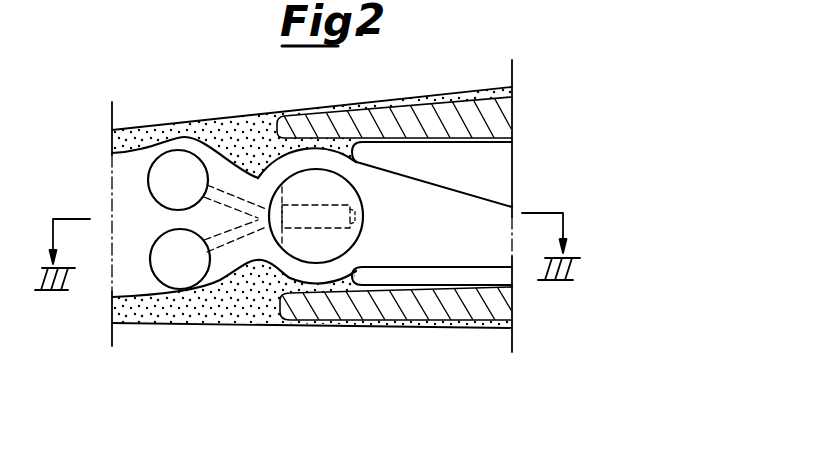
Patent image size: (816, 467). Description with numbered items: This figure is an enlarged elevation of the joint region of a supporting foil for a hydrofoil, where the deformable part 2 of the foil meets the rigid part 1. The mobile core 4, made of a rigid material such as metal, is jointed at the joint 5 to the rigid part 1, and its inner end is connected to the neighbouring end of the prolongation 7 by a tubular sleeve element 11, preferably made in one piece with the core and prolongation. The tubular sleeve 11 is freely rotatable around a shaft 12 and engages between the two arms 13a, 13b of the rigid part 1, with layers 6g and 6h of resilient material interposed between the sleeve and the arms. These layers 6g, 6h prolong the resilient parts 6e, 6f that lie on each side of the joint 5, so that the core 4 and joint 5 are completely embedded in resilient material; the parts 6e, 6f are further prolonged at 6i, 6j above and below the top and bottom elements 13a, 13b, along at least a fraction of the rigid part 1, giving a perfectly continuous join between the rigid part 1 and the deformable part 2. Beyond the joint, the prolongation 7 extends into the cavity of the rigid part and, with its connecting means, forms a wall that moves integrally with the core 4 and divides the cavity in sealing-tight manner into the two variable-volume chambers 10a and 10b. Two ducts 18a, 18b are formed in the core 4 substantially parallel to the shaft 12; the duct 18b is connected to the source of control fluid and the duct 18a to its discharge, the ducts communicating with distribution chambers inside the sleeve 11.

The rigid part 1 is at (403, 334).
The deformable part 2 is at (147, 334).
The mobile core 4 is at (136, 212).
The joint 5 is at (270, 165).
The resilient layer part on one side of the joint 6e is at (243, 153).
The resilient layer part on other side of the joint 6f is at (253, 277).
The resilient layer 6g is at (362, 158).
The resilient layer 6h is at (345, 283).
The resilient layer prolongation 6i is at (465, 97).
The resilient layer prolongation 6j is at (473, 330).
The prolongation 7 is at (478, 217).
The variable-volume chamber 10a is at (455, 170).
The variable-volume chamber 10b is at (440, 272).
The tubular sleeve element 11 is at (305, 158).
The shaft 12 is at (305, 240).
The arm 13a is at (320, 126).
The arm 13b is at (330, 306).
The duct 18a is at (207, 184).
The duct 18b is at (208, 254).